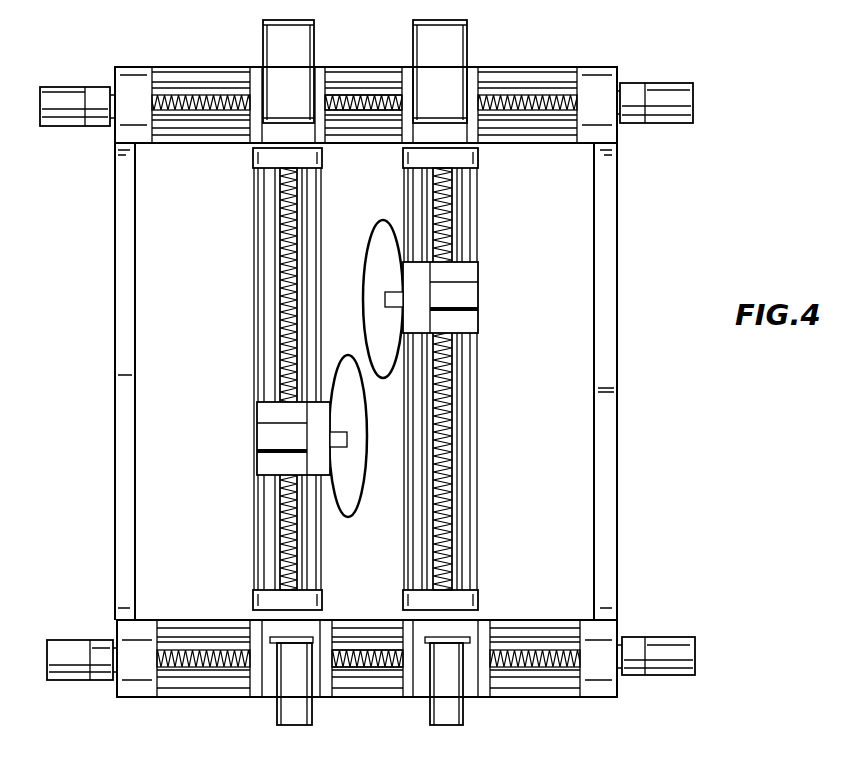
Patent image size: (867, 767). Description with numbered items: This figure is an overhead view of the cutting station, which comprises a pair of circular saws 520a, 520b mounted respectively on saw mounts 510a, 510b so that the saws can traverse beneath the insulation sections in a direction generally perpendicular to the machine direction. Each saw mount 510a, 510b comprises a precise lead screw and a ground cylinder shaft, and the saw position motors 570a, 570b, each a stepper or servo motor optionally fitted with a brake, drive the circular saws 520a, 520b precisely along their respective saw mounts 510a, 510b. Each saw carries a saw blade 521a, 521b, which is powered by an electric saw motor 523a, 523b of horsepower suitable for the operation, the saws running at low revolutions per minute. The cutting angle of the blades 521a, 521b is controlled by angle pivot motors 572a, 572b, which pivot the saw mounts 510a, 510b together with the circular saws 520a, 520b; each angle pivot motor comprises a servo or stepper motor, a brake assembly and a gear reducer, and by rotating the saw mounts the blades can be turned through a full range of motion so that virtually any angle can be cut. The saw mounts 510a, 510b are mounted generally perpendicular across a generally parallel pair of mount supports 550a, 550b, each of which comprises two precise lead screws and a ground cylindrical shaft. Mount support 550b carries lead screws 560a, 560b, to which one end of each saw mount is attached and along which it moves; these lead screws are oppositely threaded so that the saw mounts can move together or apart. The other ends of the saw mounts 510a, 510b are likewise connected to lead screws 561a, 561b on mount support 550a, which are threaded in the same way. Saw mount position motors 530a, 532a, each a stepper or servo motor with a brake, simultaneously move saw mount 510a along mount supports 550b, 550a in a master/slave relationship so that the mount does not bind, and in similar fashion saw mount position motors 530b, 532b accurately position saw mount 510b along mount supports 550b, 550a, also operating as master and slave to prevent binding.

The saw mount 510a is at (453, 441).
The saw mount 510b is at (291, 248).
The circular saw 520a is at (491, 292).
The circular saw 520b is at (238, 456).
The saw blade 521a is at (378, 232).
The saw blade 521b is at (363, 486).
The saw motor 523a is at (458, 300).
The saw motor 523b is at (262, 432).
The saw mount position motor 530a is at (678, 646).
The saw mount position motor 530b is at (60, 646).
The saw mount position motor 532a is at (665, 96).
The saw mount position motor 532b is at (91, 93).
The mount support 550a is at (364, 82).
The mount support 550b is at (380, 672).
The lead screw 560a is at (396, 652).
The lead screw 560b is at (203, 656).
The lead screw 561a is at (543, 112).
The lead screw 561b is at (208, 112).
The saw position motor 570a is at (465, 715).
The saw position motor 570b is at (277, 717).
The angle pivot motor 572a is at (467, 27).
The angle pivot motor 572b is at (263, 30).